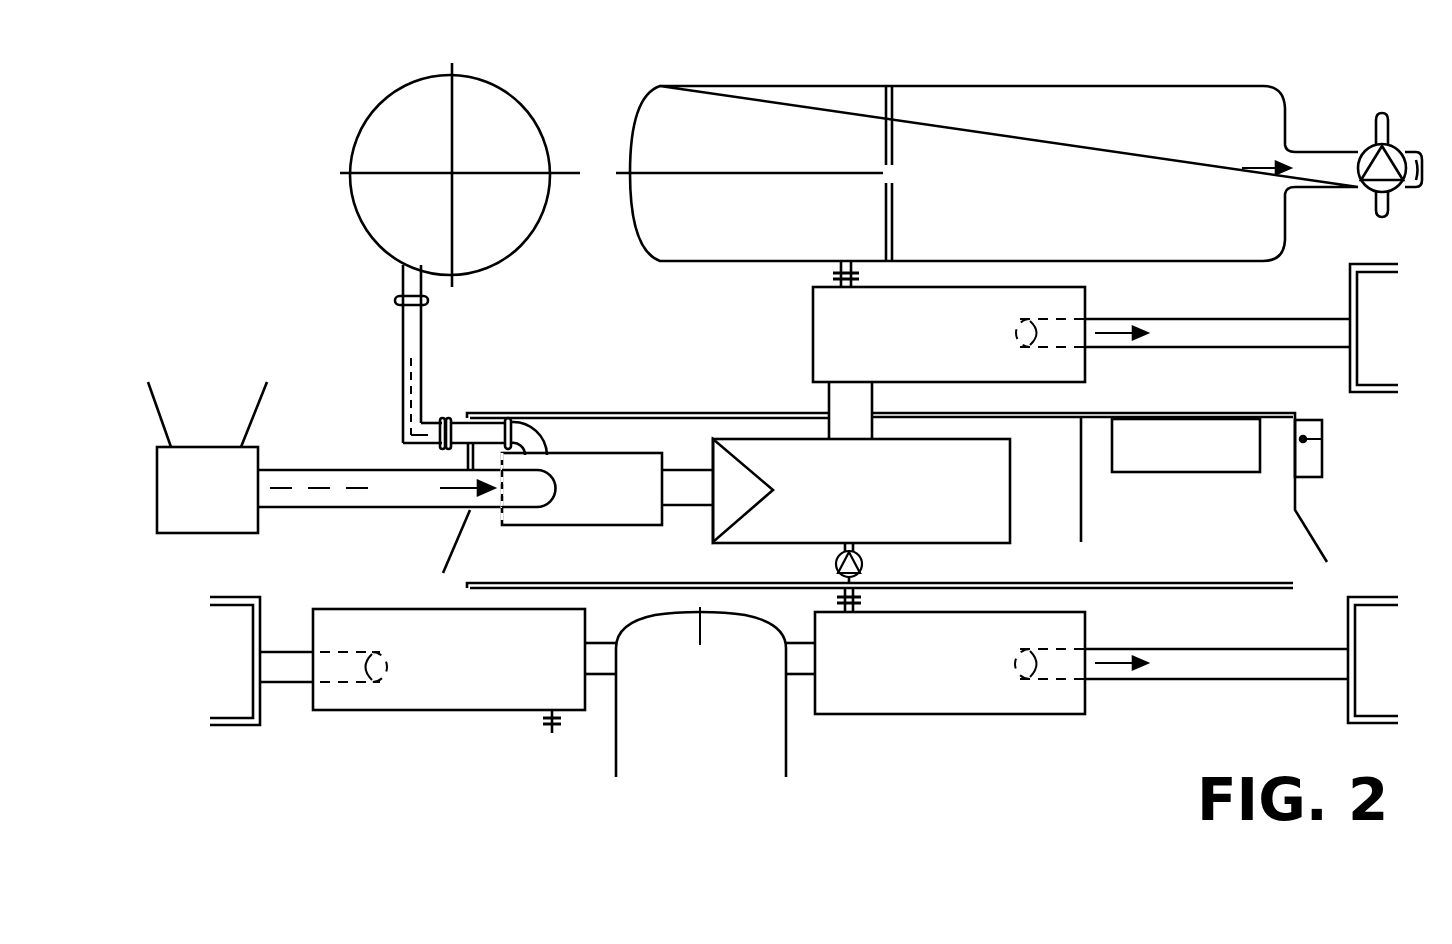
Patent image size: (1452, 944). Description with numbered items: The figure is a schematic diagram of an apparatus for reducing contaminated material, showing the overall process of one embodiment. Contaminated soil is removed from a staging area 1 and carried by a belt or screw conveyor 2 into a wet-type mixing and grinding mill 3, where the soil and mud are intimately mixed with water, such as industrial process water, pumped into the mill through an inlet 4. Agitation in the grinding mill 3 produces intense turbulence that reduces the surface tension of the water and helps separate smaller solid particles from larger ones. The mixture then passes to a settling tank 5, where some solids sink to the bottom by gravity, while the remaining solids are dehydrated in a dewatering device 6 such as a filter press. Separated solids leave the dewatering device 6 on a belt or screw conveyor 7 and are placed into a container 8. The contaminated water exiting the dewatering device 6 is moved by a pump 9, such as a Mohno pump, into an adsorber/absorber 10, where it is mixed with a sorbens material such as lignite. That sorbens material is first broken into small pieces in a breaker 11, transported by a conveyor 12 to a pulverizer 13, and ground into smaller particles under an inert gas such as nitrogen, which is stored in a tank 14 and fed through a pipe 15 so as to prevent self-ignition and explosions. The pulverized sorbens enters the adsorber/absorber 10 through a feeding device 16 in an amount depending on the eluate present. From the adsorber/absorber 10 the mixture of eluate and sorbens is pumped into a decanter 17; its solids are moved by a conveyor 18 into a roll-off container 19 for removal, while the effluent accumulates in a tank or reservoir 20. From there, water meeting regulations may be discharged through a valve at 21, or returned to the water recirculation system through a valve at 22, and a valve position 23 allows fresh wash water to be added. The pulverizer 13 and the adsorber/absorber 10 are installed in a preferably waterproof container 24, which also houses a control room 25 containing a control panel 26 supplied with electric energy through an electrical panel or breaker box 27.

The staging area 1 is at (235, 661).
The belt or screw conveyor 2 is at (286, 668).
The wet-type mixing and grinding mill 3 is at (464, 659).
The inlet 4 is at (552, 736).
The settling tank 5 is at (701, 692).
The dewatering device 6 is at (935, 651).
The belt or screw conveyor 7 is at (1216, 664).
The container 8 is at (1373, 660).
The pump 9 is at (860, 563).
The adsorber/absorber 10 is at (861, 491).
The breaker 11 is at (207, 457).
The conveyor 12 is at (380, 508).
The pulverizer 13 is at (607, 489).
The tank 14 is at (460, 175).
The pipe 15 is at (471, 360).
The feeding device 16 is at (743, 490).
The decanter 17 is at (949, 350).
The conveyor 18 is at (1183, 332).
The container 19 is at (1374, 328).
The tank or reservoir 20 is at (987, 173).
The valve 21 is at (1396, 153).
The valve 22 is at (1386, 222).
The valve position 23 is at (1364, 116).
The container 24 is at (897, 487).
The control room 25 is at (1103, 479).
The control panel 26 is at (1186, 445).
The electrical panel or breaker box 27 is at (1326, 448).